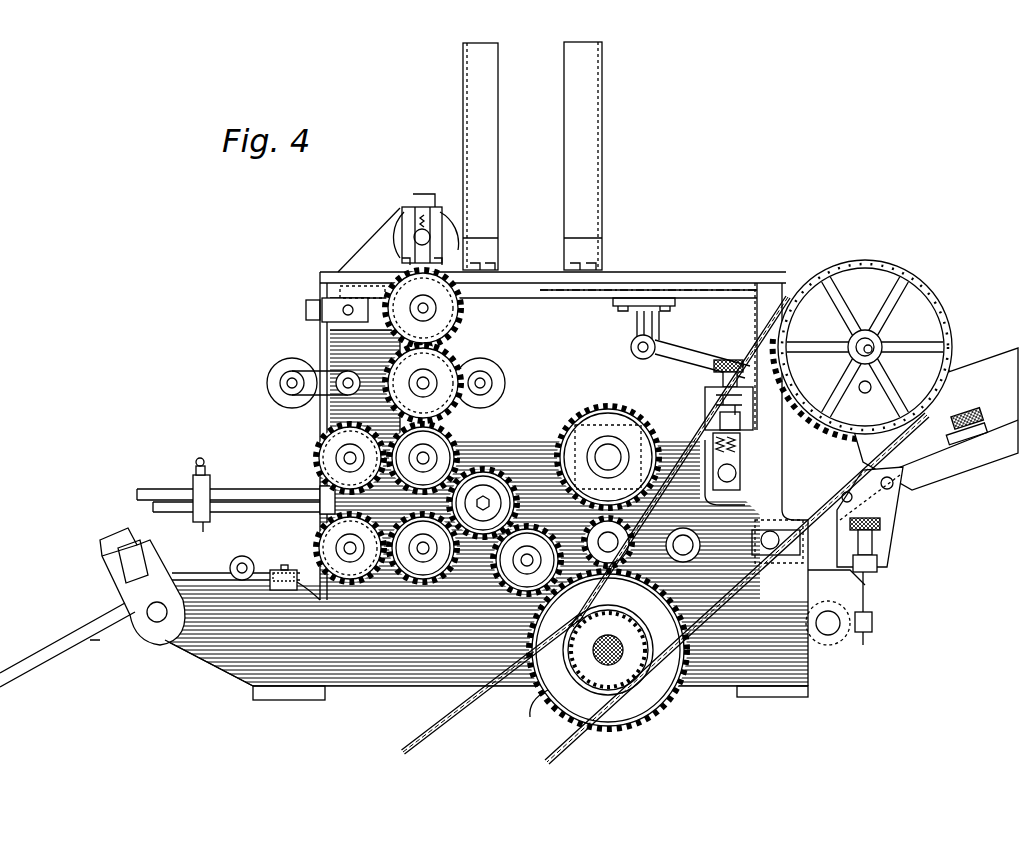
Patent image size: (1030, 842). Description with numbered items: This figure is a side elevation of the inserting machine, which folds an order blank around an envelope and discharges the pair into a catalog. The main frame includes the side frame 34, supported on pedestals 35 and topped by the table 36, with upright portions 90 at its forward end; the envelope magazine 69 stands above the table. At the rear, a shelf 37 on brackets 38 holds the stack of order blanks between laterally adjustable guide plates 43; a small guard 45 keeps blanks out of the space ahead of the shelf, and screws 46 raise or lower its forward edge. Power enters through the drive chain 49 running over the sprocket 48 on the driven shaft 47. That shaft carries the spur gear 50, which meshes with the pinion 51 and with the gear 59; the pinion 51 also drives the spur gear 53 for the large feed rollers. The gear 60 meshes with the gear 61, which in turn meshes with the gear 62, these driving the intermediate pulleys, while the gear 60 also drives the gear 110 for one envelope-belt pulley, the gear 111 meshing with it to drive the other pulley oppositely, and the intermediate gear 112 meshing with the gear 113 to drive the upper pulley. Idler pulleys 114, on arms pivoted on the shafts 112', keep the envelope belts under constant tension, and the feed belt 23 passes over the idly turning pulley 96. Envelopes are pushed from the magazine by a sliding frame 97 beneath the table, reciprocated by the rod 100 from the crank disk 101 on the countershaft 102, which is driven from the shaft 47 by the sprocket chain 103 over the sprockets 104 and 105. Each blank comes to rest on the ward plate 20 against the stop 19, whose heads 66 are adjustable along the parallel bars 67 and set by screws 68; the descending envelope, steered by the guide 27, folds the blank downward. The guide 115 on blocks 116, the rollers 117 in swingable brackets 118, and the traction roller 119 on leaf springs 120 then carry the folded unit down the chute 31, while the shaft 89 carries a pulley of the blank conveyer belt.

The stop 19 is at (204, 525).
The ward plate 20 is at (262, 512).
The feed belt 23 is at (374, 238).
The guide 27 is at (262, 500).
The chute 31 is at (68, 652).
The side frame 34 is at (432, 655).
The pedestals 35 is at (318, 700).
The table 36 is at (662, 283).
The shelf 37 is at (986, 455).
The brackets 38 is at (900, 511).
The guide plates 43 is at (1012, 354).
The guard 45 is at (866, 600).
The screws 46 is at (882, 527).
The driven shaft 47 is at (578, 734).
The sprocket 48 is at (688, 692).
The drive chain 49 is at (410, 745).
The spur gear 50 is at (536, 712).
The pinion 51 is at (608, 537).
The spur gear 53 is at (583, 406).
The gear 59 is at (526, 600).
The gear 60 is at (500, 470).
The gear 61 is at (420, 592).
The gear 62 is at (350, 592).
The heads 66 is at (215, 481).
The parallel bars 67 is at (143, 492).
The screws 68 is at (203, 466).
The magazine 69 is at (598, 162).
The shaft 89 is at (692, 540).
The upright portions 90 is at (352, 356).
The pulley 96 is at (450, 234).
The frame 97 is at (576, 300).
The rod 100 is at (690, 356).
The crank disk 101 is at (930, 322).
The countershaft 102 is at (858, 346).
The sprocket chain 103 is at (950, 386).
The sprocket 104 is at (650, 640).
The sprocket 105 is at (838, 443).
The gear 110 is at (452, 452).
The gear 111 is at (326, 447).
The intermediate gear 112 is at (460, 381).
The shafts 112' is at (373, 378).
The gear 113 is at (456, 312).
The idler pulleys 114 is at (272, 384).
The guide 115 is at (222, 577).
The blocks 116 is at (280, 596).
The rollers 117 is at (142, 548).
The brackets 118 is at (155, 574).
The traction roller 119 is at (246, 548).
The leaf springs 120 is at (283, 570).